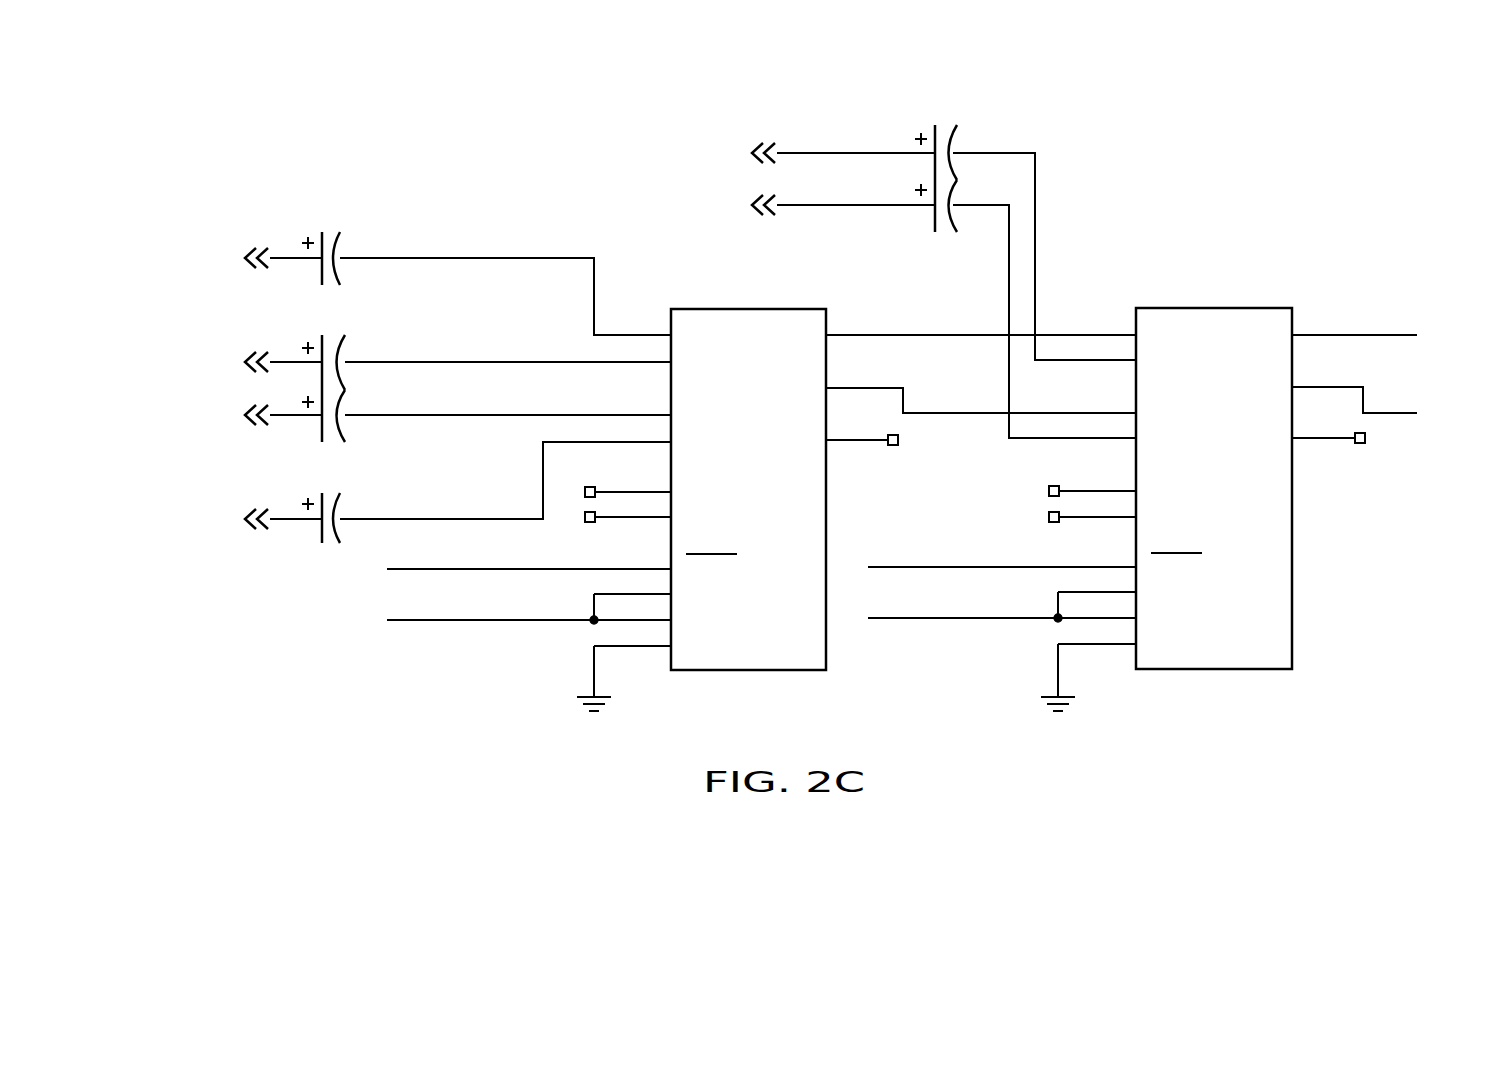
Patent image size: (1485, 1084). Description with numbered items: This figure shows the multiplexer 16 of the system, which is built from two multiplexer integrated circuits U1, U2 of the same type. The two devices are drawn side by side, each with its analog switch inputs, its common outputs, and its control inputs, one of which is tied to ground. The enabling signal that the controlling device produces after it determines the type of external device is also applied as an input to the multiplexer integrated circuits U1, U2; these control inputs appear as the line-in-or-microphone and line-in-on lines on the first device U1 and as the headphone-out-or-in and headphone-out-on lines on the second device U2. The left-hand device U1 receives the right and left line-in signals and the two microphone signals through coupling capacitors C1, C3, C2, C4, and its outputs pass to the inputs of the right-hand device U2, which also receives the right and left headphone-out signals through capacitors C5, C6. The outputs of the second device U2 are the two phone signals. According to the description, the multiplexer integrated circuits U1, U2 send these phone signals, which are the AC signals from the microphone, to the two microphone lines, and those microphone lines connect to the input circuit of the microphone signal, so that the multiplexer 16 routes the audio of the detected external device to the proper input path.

The multiplexer 16 is at (184, 112).
The multiplexer integrated circuit U1 is at (750, 489).
The multiplexer integrated circuit U2 is at (1215, 487).
The coupling capacitor C1 is at (341, 256).
The coupling capacitor C2 is at (341, 413).
The coupling capacitor C3 is at (341, 360).
The coupling capacitor C4 is at (341, 514).
The coupling capacitor C5 is at (953, 150).
The coupling capacitor C6 is at (953, 202).